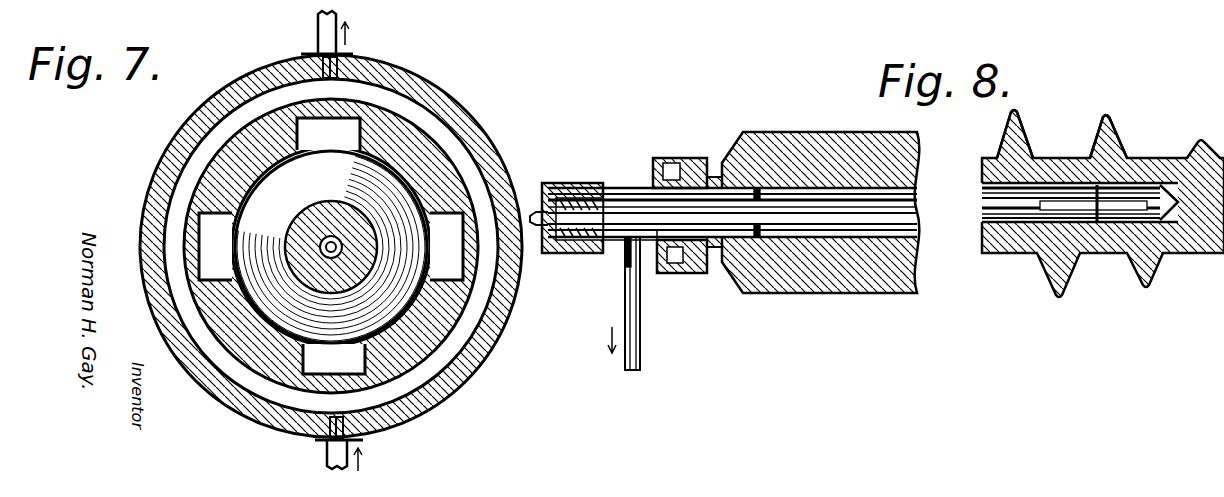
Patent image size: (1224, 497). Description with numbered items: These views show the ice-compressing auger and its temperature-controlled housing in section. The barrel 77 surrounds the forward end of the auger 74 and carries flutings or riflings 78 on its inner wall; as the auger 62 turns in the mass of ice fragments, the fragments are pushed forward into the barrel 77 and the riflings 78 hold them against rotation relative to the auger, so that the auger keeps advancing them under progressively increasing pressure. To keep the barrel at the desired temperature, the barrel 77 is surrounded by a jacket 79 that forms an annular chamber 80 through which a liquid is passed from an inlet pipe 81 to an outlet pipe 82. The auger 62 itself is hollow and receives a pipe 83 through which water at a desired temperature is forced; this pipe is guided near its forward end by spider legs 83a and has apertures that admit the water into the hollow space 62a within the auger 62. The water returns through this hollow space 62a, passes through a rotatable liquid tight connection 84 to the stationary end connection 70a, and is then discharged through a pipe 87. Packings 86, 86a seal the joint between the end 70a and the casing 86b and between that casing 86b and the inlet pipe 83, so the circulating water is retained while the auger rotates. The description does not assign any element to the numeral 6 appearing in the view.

In FIG. 8, the cylinder body 6 is at (750, 143).
In FIG. 7, the auger 62 is at (328, 213).
In FIG. 8, the auger 62 is at (1087, 173).
In FIG. 8, the hollow space 62a is at (963, 260).
In FIG. 8, the stationary end connection 70a is at (883, 124).
In FIG. 7, the auger 74 is at (312, 245).
In FIG. 8, the auger 74 is at (1028, 137).
In FIG. 7, the barrel 77 is at (385, 127).
In FIG. 7, the flutings or riflings 78 is at (350, 135).
In FIG. 7, the jacket 79 is at (443, 230).
In FIG. 7, the annular chamber 80 is at (470, 175).
In FIG. 7, the inlet pipe 81 is at (327, 458).
In FIG. 7, the outlet pipe 82 is at (327, 28).
In FIG. 7, the pipe 83 is at (318, 245).
In FIG. 8, the pipe 83 is at (532, 210).
In FIG. 8, the spider legs 83a is at (1043, 263).
In FIG. 8, the rotatable liquid tight connection 84 is at (570, 253).
In FIG. 8, the packing 86 is at (680, 160).
In FIG. 8, the packing 86a is at (597, 182).
In FIG. 8, the casing 86b is at (643, 243).
In FIG. 8, the pipe 87 is at (641, 338).